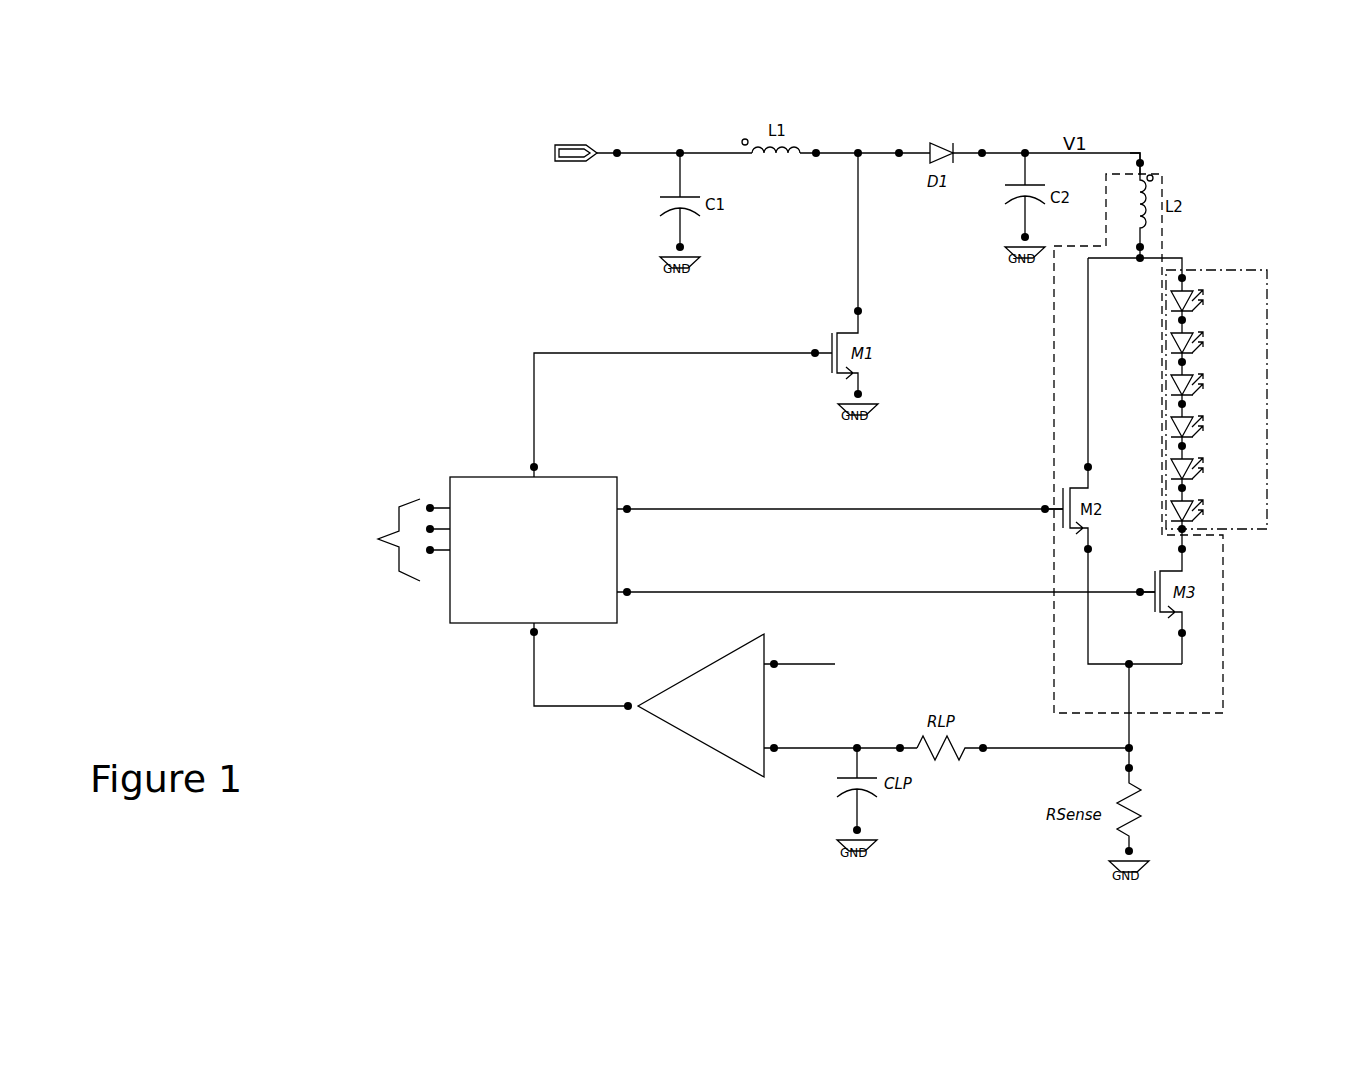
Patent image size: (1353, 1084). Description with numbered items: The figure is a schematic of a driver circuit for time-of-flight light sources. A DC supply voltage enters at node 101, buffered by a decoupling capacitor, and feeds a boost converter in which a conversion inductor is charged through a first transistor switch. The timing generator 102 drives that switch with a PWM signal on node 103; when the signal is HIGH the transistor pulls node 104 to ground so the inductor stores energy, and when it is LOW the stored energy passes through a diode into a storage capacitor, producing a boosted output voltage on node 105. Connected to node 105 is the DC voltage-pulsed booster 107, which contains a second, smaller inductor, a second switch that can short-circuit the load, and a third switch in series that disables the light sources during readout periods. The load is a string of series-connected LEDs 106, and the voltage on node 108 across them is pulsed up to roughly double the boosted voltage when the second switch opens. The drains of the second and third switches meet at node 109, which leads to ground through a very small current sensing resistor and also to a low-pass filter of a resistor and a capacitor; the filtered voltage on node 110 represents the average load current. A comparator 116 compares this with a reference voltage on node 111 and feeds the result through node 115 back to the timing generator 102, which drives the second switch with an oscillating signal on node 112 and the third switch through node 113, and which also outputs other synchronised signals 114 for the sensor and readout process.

The node 101 is at (573, 171).
The timing generator 102 is at (595, 477).
The node 103 is at (587, 353).
The node 104 is at (858, 244).
The node 105 is at (1131, 152).
The LEDs 106 is at (1240, 534).
The DC voltage-Pulsed booster 107 is at (1223, 713).
The node 108 is at (1181, 258).
The node 109 is at (1030, 750).
The node 110 is at (823, 752).
The node 111 is at (828, 662).
The node 112 is at (720, 509).
The node 113 is at (765, 592).
The other synchronised signals 114 is at (407, 578).
The node 115 is at (573, 707).
The comparator 116 is at (742, 772).